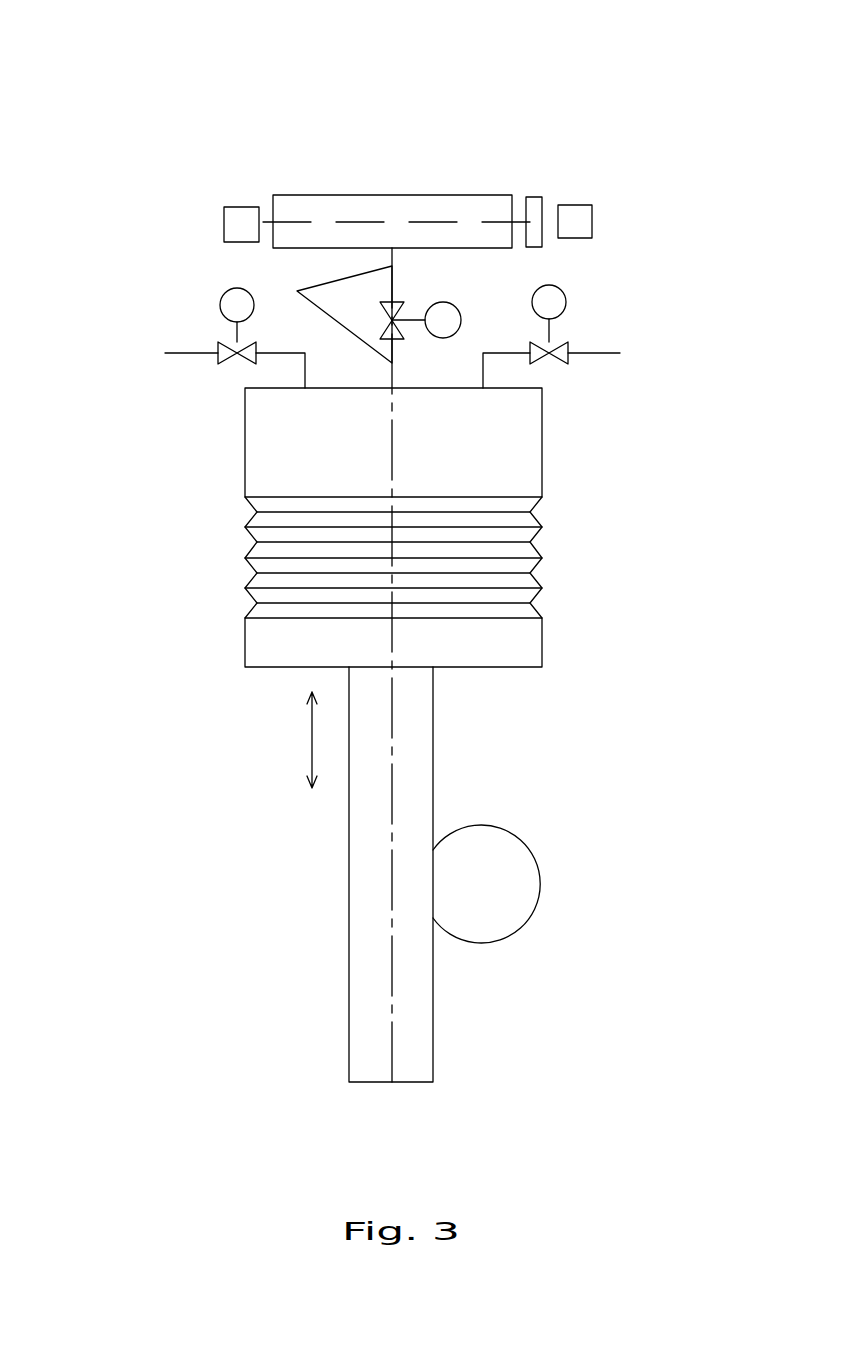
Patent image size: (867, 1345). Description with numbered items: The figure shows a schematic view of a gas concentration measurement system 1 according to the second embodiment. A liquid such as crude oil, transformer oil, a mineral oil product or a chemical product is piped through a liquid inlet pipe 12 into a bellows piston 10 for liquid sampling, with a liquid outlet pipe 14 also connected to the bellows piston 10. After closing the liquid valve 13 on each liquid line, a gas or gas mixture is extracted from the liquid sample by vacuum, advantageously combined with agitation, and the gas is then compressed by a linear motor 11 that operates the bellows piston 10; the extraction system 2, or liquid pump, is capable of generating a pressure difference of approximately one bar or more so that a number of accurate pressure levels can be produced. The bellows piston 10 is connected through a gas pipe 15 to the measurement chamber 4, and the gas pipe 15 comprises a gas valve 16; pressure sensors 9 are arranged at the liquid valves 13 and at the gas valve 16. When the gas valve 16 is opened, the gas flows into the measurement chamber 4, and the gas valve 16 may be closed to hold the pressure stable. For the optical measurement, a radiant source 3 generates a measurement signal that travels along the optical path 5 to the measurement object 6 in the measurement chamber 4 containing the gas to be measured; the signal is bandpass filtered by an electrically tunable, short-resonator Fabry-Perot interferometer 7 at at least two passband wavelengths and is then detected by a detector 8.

The gas concentration measurement system 1 is at (212, 292).
The extraction system 2 is at (445, 676).
The radiant source 3 is at (241, 207).
The measurement chamber 4 is at (292, 195).
The optical path 5 is at (323, 222).
The measurement object 6 is at (372, 212).
The Fabry-Perot interferometer 7 is at (533, 197).
The detector 8 is at (578, 205).
The pressure sensor 9 is at (446, 302).
The bellows piston 10 is at (300, 551).
The linear motor 11 is at (532, 853).
The liquid inlet pipe 12 is at (500, 353).
The liquid valve 13 is at (216, 358).
The liquid outlet pipe 14 is at (290, 353).
The gas pipe 15 is at (327, 314).
The gas valve 16 is at (395, 300).